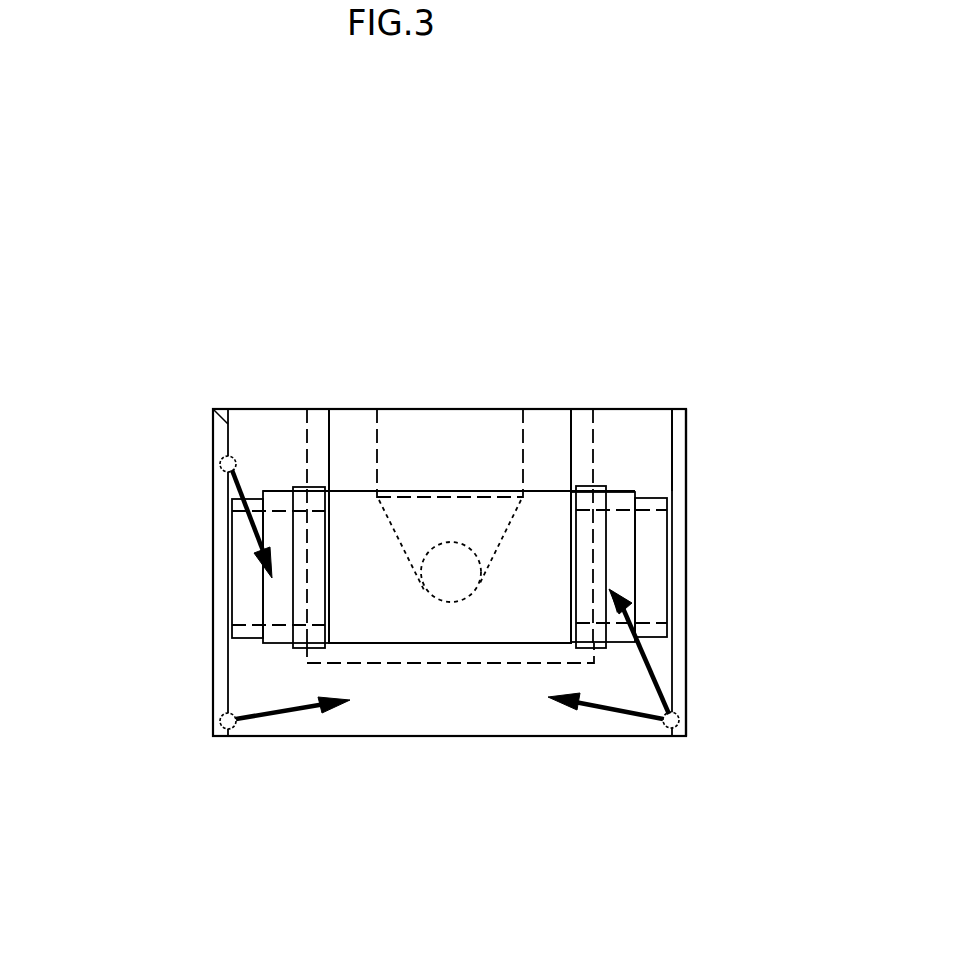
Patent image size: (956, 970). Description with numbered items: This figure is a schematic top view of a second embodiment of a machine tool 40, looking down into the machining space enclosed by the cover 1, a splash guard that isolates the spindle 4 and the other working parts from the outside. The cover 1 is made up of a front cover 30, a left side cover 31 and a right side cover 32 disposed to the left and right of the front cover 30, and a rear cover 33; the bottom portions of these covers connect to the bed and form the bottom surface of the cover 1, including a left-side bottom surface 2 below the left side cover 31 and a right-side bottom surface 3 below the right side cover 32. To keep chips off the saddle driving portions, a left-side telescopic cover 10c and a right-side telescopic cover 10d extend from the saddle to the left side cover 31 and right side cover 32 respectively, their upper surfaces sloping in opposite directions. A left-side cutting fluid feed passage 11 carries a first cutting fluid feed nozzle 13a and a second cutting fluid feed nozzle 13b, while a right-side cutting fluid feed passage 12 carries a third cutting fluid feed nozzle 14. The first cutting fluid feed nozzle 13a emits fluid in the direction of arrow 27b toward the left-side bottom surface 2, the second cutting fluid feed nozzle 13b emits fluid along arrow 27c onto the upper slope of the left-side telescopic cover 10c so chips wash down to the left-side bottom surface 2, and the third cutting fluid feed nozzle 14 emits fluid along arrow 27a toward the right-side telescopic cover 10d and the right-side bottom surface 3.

The camera module 40 is at (472, 187).
The cover 1 is at (690, 443).
The left-side bottom surface 2 is at (249, 674).
The right-side bottom surface 3 is at (653, 478).
The spindle 4 is at (449, 562).
The left-side telescopic cover 10c is at (249, 593).
The right-side telescopic cover 10d is at (647, 563).
The left-side cutting fluid feed passage 11 is at (213, 409).
The right-side cutting fluid feed passage 12 is at (670, 437).
The first cutting fluid feed nozzle 13a is at (221, 727).
The second cutting fluid feed nozzle 13b is at (221, 459).
The third cutting fluid feed nozzle 14 is at (669, 730).
The arrow 27a is at (647, 662).
The arrow 27b is at (303, 710).
The arrow 27c is at (242, 500).
The front cover 30 is at (450, 737).
The left side cover 31 is at (212, 535).
The right side cover 32 is at (683, 632).
The rear cover 33 is at (353, 408).